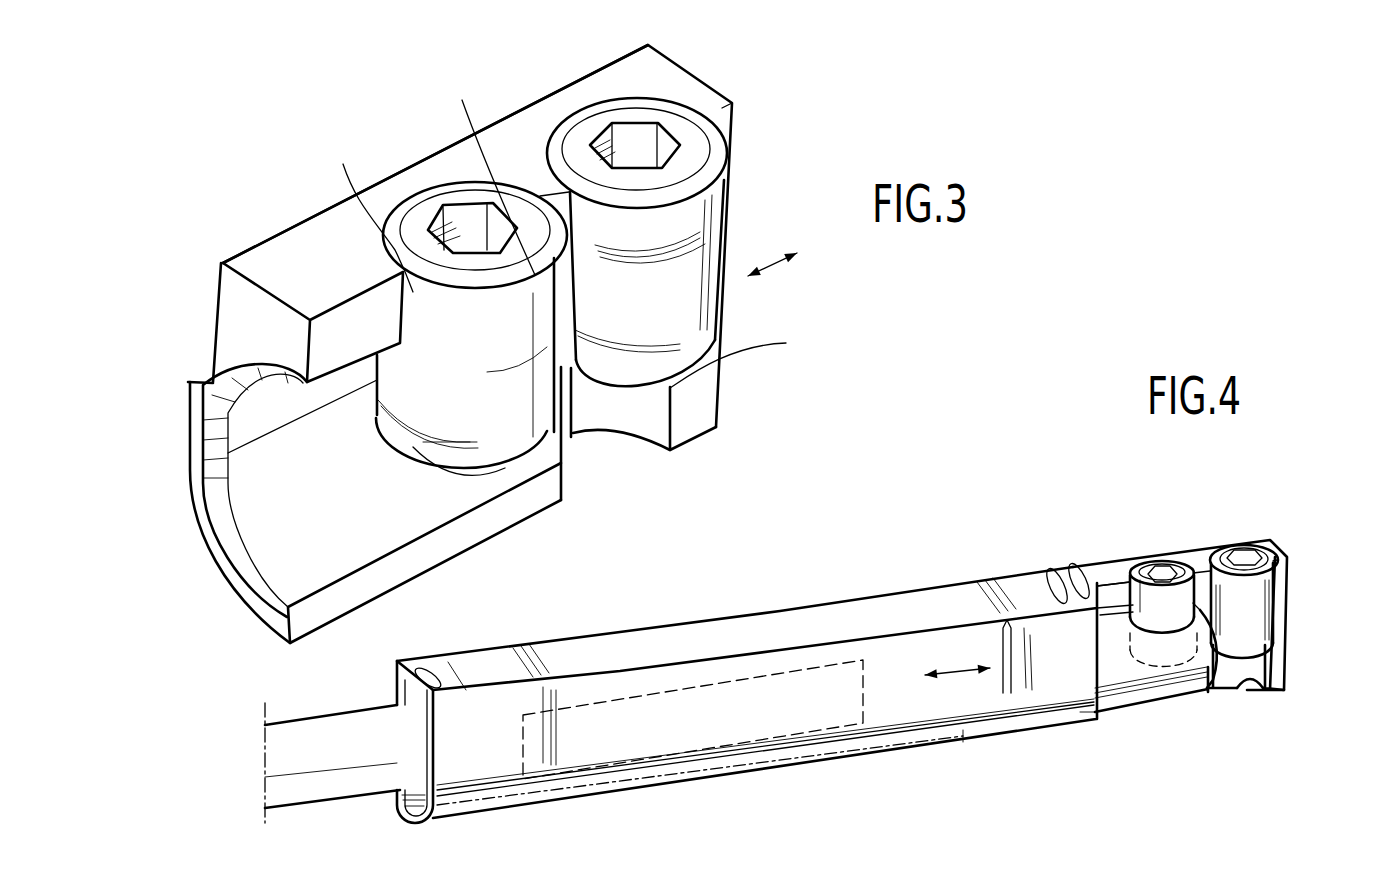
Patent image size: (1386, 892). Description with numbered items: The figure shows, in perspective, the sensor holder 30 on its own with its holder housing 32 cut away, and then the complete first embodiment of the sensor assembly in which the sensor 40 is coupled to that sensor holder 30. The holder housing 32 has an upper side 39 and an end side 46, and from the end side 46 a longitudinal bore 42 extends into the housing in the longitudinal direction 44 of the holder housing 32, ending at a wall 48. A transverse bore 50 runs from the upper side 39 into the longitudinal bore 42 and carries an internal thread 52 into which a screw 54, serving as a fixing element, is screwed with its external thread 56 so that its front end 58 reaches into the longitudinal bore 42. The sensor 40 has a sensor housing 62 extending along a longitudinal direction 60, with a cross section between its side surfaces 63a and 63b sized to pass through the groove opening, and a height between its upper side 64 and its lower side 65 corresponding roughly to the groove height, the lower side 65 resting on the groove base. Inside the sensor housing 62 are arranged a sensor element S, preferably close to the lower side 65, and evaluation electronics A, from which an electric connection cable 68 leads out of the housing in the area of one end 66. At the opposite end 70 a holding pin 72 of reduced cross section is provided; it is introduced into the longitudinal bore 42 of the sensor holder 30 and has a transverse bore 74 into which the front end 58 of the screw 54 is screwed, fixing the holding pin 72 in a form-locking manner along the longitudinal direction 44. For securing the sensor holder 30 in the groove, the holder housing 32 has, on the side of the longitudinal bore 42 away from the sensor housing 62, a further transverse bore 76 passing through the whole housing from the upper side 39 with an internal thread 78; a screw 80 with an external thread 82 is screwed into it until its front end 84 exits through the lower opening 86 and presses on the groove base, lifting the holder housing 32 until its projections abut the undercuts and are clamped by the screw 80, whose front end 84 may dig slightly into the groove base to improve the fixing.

In FIG. 4, the sensor holder 30 is at (1264, 525).
In FIG. 3, the holder housing 32 is at (744, 112).
In FIG. 3, the upper side 39 is at (660, 62).
In FIG. 4, the upper side 39 is at (1093, 570).
In FIG. 4, the sensor 40 is at (1132, 623).
In FIG. 3, the longitudinal bore 42 is at (277, 462).
In FIG. 4, the longitudinal bore 42 is at (1187, 687).
In FIG. 3, the longitudinal direction 44 is at (772, 262).
In FIG. 3, the end side 46 is at (253, 597).
In FIG. 3, the wall 48 is at (572, 455).
In FIG. 4, the wall 48 is at (1213, 683).
In FIG. 3, the transverse bore 50 is at (419, 278).
In FIG. 4, the transverse bore 50 is at (1156, 542).
In FIG. 3, the internal thread 52 is at (369, 213).
In FIG. 3, the screw 54 is at (452, 193).
In FIG. 4, the screw 54 is at (1177, 598).
In FIG. 3, the screw rim 56 is at (486, 171).
In FIG. 3, the front end 58 is at (503, 432).
In FIG. 4, the longitudinal direction 60 is at (960, 678).
In FIG. 4, the sensor housing 62 is at (803, 717).
In FIG. 4, the side surface 63a is at (393, 700).
In FIG. 4, the side surface 63b is at (467, 758).
In FIG. 4, the upper side 64 is at (744, 699).
In FIG. 4, the lower side 65 is at (760, 777).
In FIG. 4, the end 66 is at (457, 790).
In FIG. 4, the electric connection cable 68 is at (327, 737).
In FIG. 4, the end 70 is at (1073, 680).
In FIG. 4, the holding pin 72 is at (1147, 657).
In FIG. 4, the transverse bore 74 is at (1150, 613).
In FIG. 3, the transverse bore 76 is at (658, 405).
In FIG. 4, the transverse bore 76 is at (1250, 663).
In FIG. 3, the internal thread 78 is at (744, 353).
In FIG. 3, the screw 80 is at (681, 242).
In FIG. 4, the screw 80 is at (1262, 592).
In FIG. 3, the external thread 82 is at (683, 258).
In FIG. 3, the front end 84 is at (672, 362).
In FIG. 4, the front end 84 is at (1247, 683).
In FIG. 3, the lower opening 86 is at (640, 447).
In FIG. 4, the evaluation electronics A is at (643, 753).
In FIG. 4, the sensor element S is at (1013, 730).